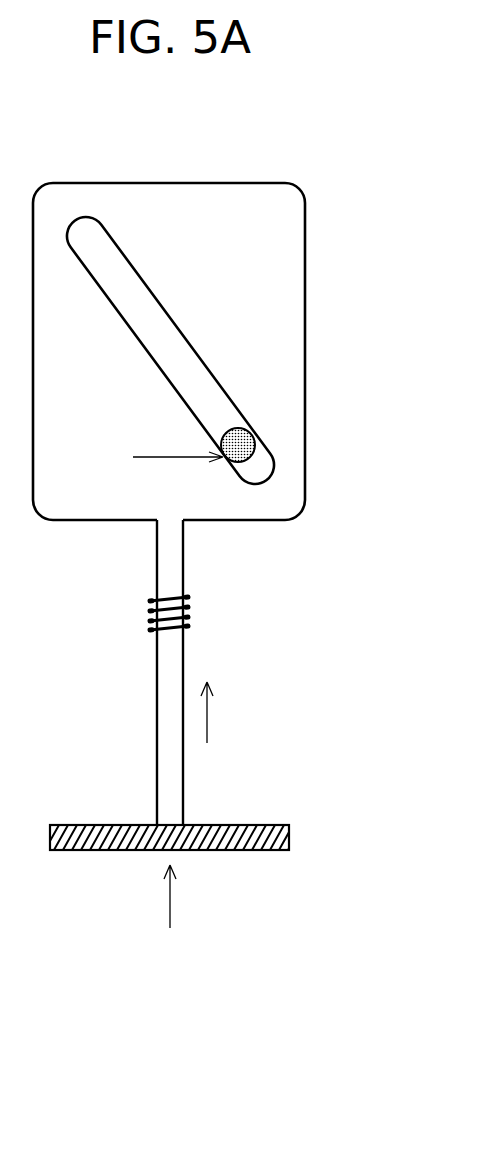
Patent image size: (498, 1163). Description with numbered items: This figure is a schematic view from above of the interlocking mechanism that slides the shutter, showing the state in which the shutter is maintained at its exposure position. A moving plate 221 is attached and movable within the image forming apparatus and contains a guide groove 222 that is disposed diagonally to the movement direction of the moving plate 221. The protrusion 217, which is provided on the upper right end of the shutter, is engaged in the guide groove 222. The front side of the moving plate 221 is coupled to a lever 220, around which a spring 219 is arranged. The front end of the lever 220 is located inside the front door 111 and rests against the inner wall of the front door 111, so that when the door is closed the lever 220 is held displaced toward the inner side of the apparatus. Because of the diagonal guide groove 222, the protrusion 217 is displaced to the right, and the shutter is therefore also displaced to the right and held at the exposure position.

The moving plate 221 is at (205, 183).
The guide groove 222 is at (187, 340).
The protrusion 217 is at (237, 423).
The lever 220 is at (183, 554).
The spring 219 is at (150, 598).
The front door 111 is at (233, 825).